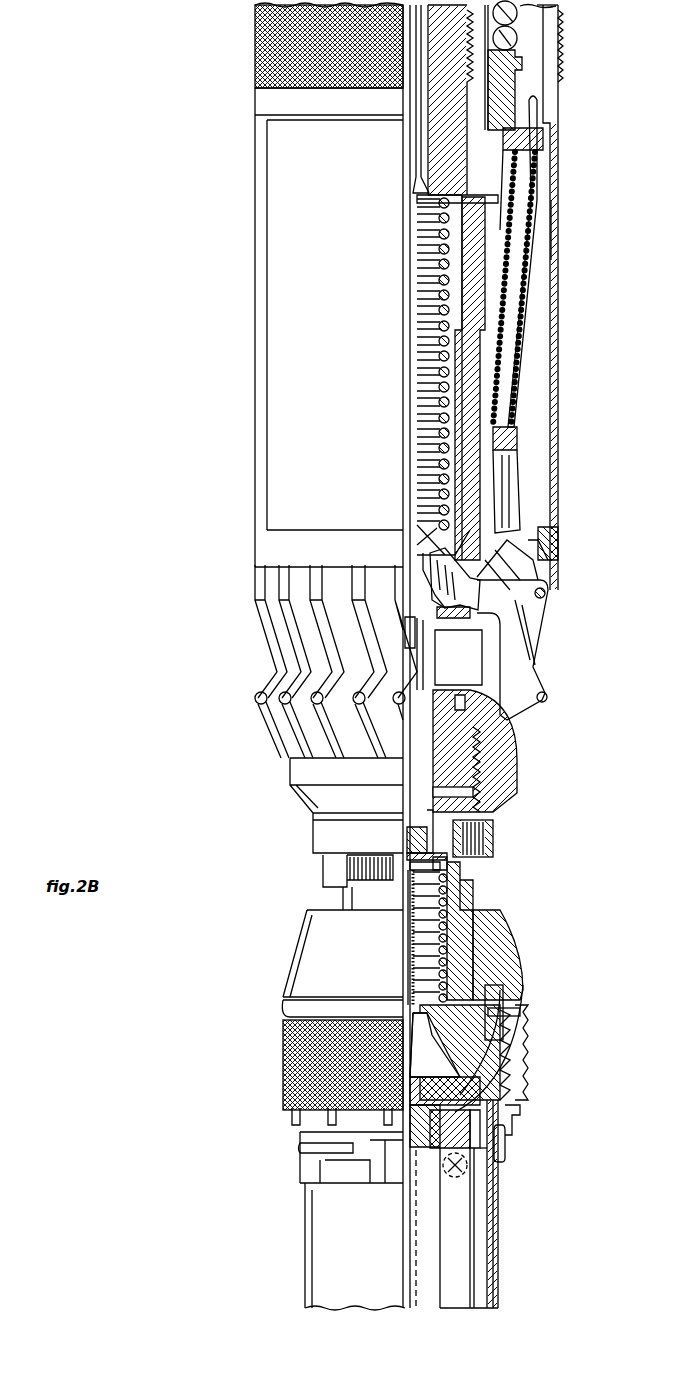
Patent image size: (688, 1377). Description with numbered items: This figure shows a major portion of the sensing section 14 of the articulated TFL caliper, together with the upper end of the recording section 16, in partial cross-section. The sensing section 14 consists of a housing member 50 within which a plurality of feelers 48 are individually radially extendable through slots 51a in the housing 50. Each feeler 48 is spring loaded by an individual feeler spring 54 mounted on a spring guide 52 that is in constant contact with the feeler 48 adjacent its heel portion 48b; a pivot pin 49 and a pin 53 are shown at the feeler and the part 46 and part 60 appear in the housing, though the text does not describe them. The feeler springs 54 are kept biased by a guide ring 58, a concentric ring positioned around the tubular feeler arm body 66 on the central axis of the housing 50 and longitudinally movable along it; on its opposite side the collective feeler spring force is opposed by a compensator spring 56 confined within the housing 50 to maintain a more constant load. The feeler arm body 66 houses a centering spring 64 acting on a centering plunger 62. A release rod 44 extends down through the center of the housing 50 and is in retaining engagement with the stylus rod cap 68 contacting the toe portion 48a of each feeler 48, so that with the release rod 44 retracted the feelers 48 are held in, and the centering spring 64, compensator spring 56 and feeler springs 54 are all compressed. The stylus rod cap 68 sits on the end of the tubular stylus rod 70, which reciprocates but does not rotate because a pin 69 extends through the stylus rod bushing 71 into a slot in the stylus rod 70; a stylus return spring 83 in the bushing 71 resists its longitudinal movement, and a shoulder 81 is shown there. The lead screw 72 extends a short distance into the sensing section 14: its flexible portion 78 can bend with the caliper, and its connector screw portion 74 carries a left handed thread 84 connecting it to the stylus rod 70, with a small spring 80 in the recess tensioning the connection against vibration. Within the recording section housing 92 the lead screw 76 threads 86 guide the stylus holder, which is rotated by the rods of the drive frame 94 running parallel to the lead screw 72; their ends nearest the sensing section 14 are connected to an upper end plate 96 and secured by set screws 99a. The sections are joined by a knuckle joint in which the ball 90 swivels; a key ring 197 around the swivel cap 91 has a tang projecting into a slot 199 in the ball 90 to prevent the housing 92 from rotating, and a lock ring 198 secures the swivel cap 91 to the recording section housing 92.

The sensing section 14 is at (567, 230).
The recording section 16 is at (507, 1247).
The release rod 44 is at (417, 317).
The actuating sleeve 46 is at (410, 660).
The feeler 48 is at (530, 677).
The toe portion of feeler 48a is at (430, 600).
The heel portion of feeler 48b is at (432, 563).
The pivot pin 49 is at (548, 700).
The housing member 50 is at (553, 300).
The slots 51a is at (308, 748).
The spring guide 52 is at (503, 470).
The pivot pin 53 is at (548, 593).
The feeler spring 54 is at (520, 333).
The compensator spring 56 is at (540, 28).
The guide ring 58 is at (543, 77).
The retaining ring 60 is at (547, 137).
The centering plunger 62 is at (427, 517).
The centering spring 64 is at (417, 441).
The feeler arm body 66 is at (503, 373).
The stylus rod cap 68 is at (440, 612).
The pin 69 is at (473, 793).
The stylus rod 70 is at (447, 770).
The stylus rod bushing 71 is at (467, 923).
The lead screw 72 is at (430, 823).
The connector screw portion 74 is at (413, 930).
The lead screw 76 is at (473, 1102).
The flexible portion of lead screw 78 is at (413, 960).
The small spring 80 is at (407, 853).
The shoulder 81 is at (433, 858).
The stylus return spring 83 is at (473, 893).
The left handed thread 84 is at (420, 827).
The lead screw threads 86 is at (420, 1190).
The ball 90 is at (487, 1053).
The swivel cap 91 is at (503, 950).
The recording section housing 92 is at (490, 1267).
The drive frame 94 is at (460, 1223).
The upper end plate 96 is at (427, 1153).
The set screws 99a is at (470, 1167).
The key ring 197 is at (520, 1013).
The lock ring 198 is at (500, 1143).
The slot 199 is at (493, 1000).